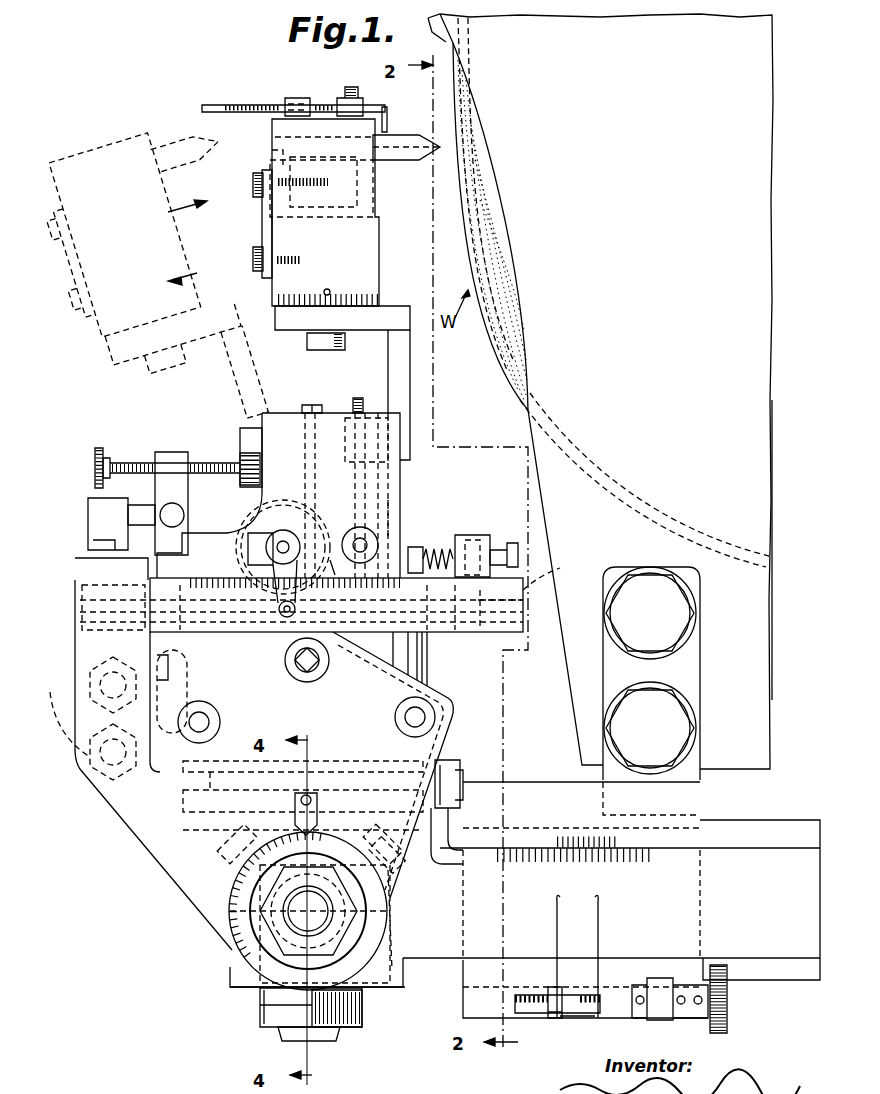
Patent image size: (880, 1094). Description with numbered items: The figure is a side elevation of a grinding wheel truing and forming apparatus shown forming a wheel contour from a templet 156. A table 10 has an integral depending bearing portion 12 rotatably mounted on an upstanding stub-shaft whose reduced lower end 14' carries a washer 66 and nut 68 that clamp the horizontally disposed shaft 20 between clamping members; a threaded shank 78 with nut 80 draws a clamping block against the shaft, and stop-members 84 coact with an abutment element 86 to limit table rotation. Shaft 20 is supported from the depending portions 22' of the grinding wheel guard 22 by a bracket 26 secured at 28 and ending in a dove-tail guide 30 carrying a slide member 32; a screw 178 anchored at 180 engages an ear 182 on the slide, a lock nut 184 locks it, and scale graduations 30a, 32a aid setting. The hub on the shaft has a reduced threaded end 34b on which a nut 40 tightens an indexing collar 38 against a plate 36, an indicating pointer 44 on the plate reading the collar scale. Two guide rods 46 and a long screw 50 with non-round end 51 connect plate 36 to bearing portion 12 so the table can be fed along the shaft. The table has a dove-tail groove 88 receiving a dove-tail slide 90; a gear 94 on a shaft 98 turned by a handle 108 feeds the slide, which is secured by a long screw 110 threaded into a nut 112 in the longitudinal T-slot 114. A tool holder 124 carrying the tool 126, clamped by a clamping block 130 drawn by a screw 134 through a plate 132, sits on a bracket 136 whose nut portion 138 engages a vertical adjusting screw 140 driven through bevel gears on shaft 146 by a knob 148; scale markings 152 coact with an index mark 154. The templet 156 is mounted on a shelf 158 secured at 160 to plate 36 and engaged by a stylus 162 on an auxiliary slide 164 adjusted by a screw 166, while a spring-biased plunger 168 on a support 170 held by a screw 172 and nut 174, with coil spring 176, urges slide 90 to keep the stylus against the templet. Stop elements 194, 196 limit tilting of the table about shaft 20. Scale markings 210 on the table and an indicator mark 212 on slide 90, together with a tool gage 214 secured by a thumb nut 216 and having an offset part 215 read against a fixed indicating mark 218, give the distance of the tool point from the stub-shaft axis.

The table 10 is at (210, 598).
The depending bearing portion 12 is at (428, 652).
The reduced lower end of shaft 14' is at (326, 1044).
The horizontally disposed shaft 20 is at (260, 942).
The grinding wheel guard 22 is at (600, 391).
The depending portions of guard 22' is at (792, 550).
The bracket 26 is at (695, 762).
The region of securement 28 is at (667, 717).
The dove-tail guide 30 is at (470, 1012).
The scale graduations 30a is at (604, 840).
The slide member 32 is at (435, 963).
The scale graduations 32a is at (614, 860).
The reduced extreme end portion of hub 34b is at (320, 925).
The plate 36 is at (165, 848).
The indexing collar 38 is at (232, 920).
The nut 40 is at (300, 925).
The indicating pointer 44 is at (302, 832).
The guide rods 46 is at (205, 712).
The screw 50 is at (292, 668).
The non-round end of screw 51 is at (308, 668).
The washer 66 is at (240, 985).
The nut 68 is at (260, 1010).
The threaded shank 78 is at (146, 656).
The nut 80 is at (178, 680).
The stop-members 84 is at (452, 772).
The abutment element 86 is at (440, 864).
The dove-tail groove 88 is at (552, 600).
The dove-tail slide 90 is at (400, 478).
The gear 94 is at (278, 500).
The shaft 98 is at (283, 545).
The handle 108 is at (272, 598).
The long screw 110 is at (305, 440).
The nut 112 is at (283, 618).
The longitudinal T-slot 114 is at (548, 612).
The tool holder 124 is at (372, 242).
The tool 126 is at (398, 140).
The clamping block 130 is at (360, 194).
The plate 132 is at (264, 222).
The screw 134 is at (285, 175).
The bracket 136 is at (395, 378).
The nut portion 138 is at (352, 442).
The vertical adjusting screw 140 is at (358, 398).
The horizontally disposed shaft 146 is at (388, 520).
The knob 148 is at (350, 527).
The scale markings 152 is at (375, 300).
The index mark 154 is at (320, 303).
The templet 156 is at (90, 535).
The shelf 158 is at (82, 585).
The securement of shelf 160 is at (77, 690).
The stylus 162 is at (142, 506).
The auxiliary slide 164 is at (203, 525).
The screw 166 is at (125, 460).
The spring-biased plunger 168 is at (478, 534).
The support 170 is at (512, 543).
The screw 172 is at (470, 535).
The nut 174 is at (540, 577).
The coil spring 176 is at (467, 606).
The screw 178 is at (612, 1012).
The anchorage 180 is at (660, 1005).
The ear 182 is at (577, 1010).
The lock nut 184 is at (555, 1015).
The stop element 194 is at (224, 842).
The stop element 196 is at (410, 882).
The scale markings 210 is at (210, 590).
The indicator mark 212 is at (350, 571).
The tool gage 214 is at (265, 104).
The right-angularly offset part 215 is at (386, 107).
The thumb nut 216 is at (351, 87).
The fixed indicating mark 218 is at (323, 115).